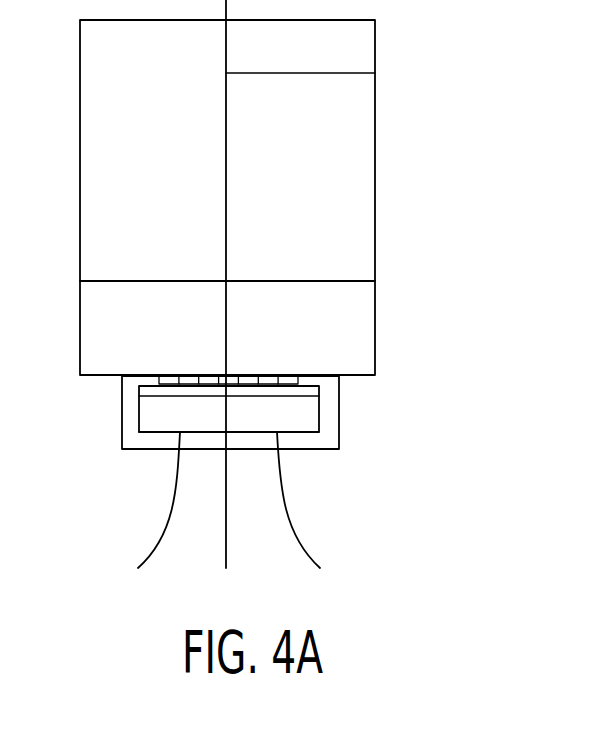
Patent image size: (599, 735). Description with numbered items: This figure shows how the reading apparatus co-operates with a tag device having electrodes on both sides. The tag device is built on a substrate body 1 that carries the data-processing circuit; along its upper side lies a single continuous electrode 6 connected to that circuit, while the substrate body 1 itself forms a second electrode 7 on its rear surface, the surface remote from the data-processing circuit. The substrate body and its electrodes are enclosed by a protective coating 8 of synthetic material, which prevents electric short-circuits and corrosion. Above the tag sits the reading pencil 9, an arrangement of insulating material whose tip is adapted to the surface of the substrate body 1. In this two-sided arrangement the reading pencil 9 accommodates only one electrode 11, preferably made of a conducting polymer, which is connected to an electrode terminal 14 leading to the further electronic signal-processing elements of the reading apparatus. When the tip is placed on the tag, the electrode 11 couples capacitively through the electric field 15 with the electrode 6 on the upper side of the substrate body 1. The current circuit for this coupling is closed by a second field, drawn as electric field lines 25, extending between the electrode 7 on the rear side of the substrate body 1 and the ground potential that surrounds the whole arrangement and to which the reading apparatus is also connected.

The substrate body 1 is at (310, 413).
The electrode 6 is at (327, 385).
The second electrode 7 is at (298, 432).
The protective coating 8 is at (122, 418).
The reading pencil 9 is at (358, 209).
The electrode 11 is at (357, 330).
The electrode terminal 14 is at (375, 73).
The electric field 15 is at (158, 381).
The electric field lines 25 is at (297, 538).